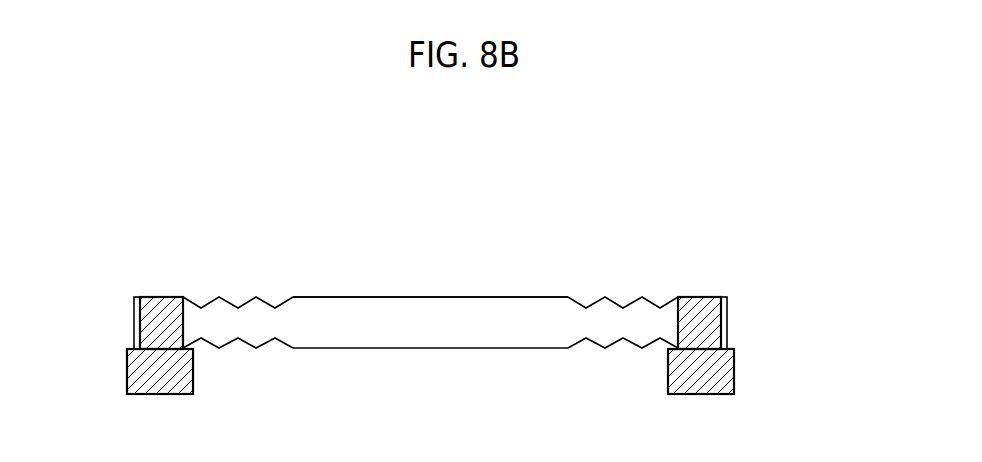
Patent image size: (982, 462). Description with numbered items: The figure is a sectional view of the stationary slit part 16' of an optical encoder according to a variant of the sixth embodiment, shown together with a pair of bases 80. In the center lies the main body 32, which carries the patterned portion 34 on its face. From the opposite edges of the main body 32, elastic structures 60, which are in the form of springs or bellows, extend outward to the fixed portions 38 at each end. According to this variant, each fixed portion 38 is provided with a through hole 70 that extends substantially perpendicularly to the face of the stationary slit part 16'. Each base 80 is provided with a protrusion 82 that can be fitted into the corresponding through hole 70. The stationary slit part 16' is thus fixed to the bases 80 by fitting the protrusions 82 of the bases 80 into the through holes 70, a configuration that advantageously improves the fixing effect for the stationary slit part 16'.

The stationary slit part 16' is at (430, 227).
The main body 32 is at (457, 296).
The patterned portion 34 is at (512, 276).
The elastic structure 60 is at (249, 297).
The fixed portion 38 is at (156, 296).
The through hole 70 is at (452, 252).
The protrusion 82 is at (138, 333).
The base 80 is at (127, 385).